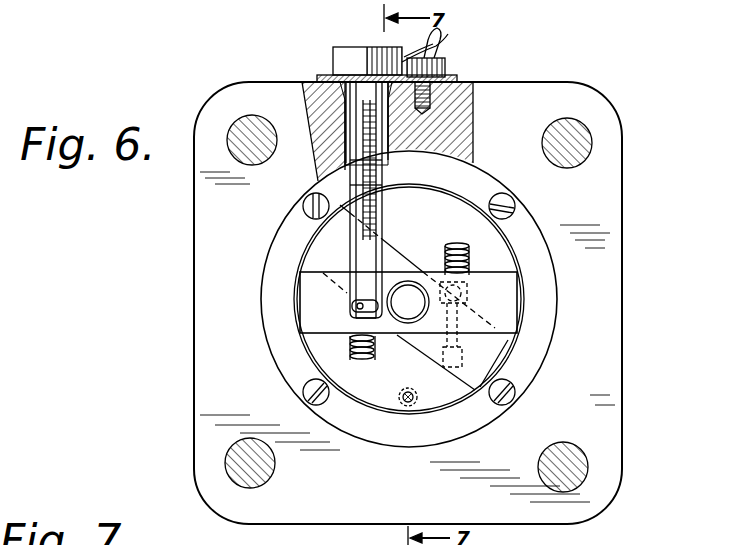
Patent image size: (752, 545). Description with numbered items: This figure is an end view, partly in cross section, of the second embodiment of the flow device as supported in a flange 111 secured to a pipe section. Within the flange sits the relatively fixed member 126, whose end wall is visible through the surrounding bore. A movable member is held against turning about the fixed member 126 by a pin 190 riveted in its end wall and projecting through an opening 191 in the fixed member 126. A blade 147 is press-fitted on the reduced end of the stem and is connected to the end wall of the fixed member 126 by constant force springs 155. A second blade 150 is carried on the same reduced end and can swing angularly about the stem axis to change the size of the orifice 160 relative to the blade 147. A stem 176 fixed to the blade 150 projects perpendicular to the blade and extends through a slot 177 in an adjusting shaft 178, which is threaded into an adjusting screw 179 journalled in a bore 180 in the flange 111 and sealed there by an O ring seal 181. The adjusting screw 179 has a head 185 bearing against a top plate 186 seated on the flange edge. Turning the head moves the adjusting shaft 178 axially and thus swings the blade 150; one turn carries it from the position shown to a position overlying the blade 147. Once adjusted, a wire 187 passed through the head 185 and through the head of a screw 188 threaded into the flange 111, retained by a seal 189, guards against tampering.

The flange 111 is at (247, 98).
The fixed member 126 is at (500, 250).
The blade 147 is at (426, 398).
The second blade 150 is at (505, 313).
The constant force springs 155 is at (462, 245).
The orifice 160 is at (393, 412).
The stem 176 is at (357, 323).
The slot 177 is at (352, 313).
The adjusting shaft 178 is at (372, 258).
The adjusting screw 179 is at (353, 92).
The bore 180 is at (387, 155).
The O ring seal 181 is at (348, 118).
The head 185 is at (337, 53).
The top plate 186 is at (458, 80).
The wire 187 is at (440, 56).
The screw 188 is at (450, 77).
The seal 189 is at (440, 38).
The pin 190 is at (410, 403).
The opening 191 is at (400, 396).